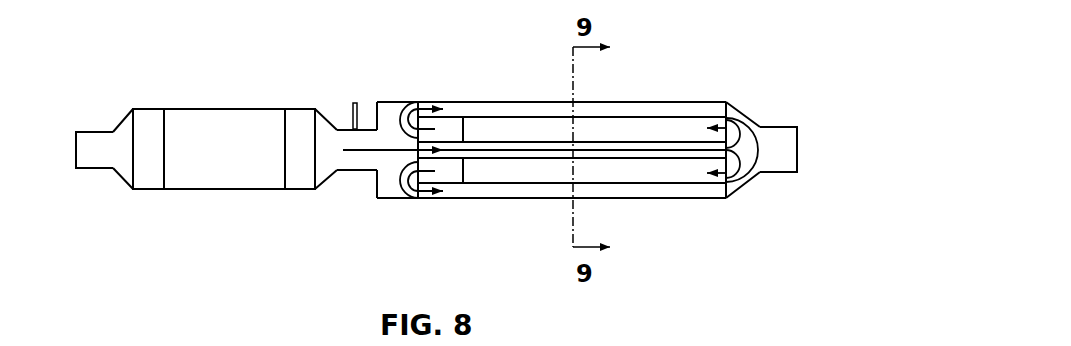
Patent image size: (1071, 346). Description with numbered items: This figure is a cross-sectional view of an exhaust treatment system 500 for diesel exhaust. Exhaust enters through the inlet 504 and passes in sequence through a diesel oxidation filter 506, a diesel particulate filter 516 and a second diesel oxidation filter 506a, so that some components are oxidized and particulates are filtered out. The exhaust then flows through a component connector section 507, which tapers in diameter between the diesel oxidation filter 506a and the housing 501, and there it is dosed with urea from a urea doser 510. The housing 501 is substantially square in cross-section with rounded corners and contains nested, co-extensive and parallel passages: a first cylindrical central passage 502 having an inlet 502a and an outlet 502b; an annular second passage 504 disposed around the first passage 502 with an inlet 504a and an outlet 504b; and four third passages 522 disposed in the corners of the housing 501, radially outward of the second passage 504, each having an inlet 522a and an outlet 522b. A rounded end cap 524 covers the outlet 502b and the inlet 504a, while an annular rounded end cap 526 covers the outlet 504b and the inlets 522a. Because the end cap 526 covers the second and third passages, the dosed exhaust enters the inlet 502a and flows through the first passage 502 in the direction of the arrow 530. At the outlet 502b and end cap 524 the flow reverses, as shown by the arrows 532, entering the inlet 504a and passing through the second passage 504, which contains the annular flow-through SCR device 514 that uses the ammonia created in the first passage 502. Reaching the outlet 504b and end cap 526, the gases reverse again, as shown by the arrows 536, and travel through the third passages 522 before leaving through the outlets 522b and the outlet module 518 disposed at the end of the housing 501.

The exhaust treatment system 500 is at (440, 152).
The housing 501 is at (618, 101).
The first cylindrical central passage 502 is at (537, 148).
The inlet of first passage 502a is at (401, 112).
The outlet of first passage 502b is at (742, 178).
The second passage 504 is at (100, 165).
The inlet of second passage 504a is at (730, 181).
The outlet of second passage 504b is at (405, 202).
The diesel oxidation filter 506 is at (152, 188).
The diesel oxidation filter 506a is at (302, 187).
The component connector section 507 is at (320, 189).
The urea doser 510 is at (355, 103).
The flow-through SCR device 514 is at (572, 130).
The diesel particulate filter 516 is at (224, 149).
The outlet module 518 is at (798, 150).
The third passages 522 is at (518, 192).
The inlets of third passages 522a is at (410, 198).
The outlets of third passages 522b is at (728, 197).
The rounded end cap 524 is at (760, 126).
The annular rounded end cap 526 is at (400, 180).
The arrow 530 is at (348, 147).
The arrows 532 is at (729, 117).
The arrows 536 is at (397, 184).